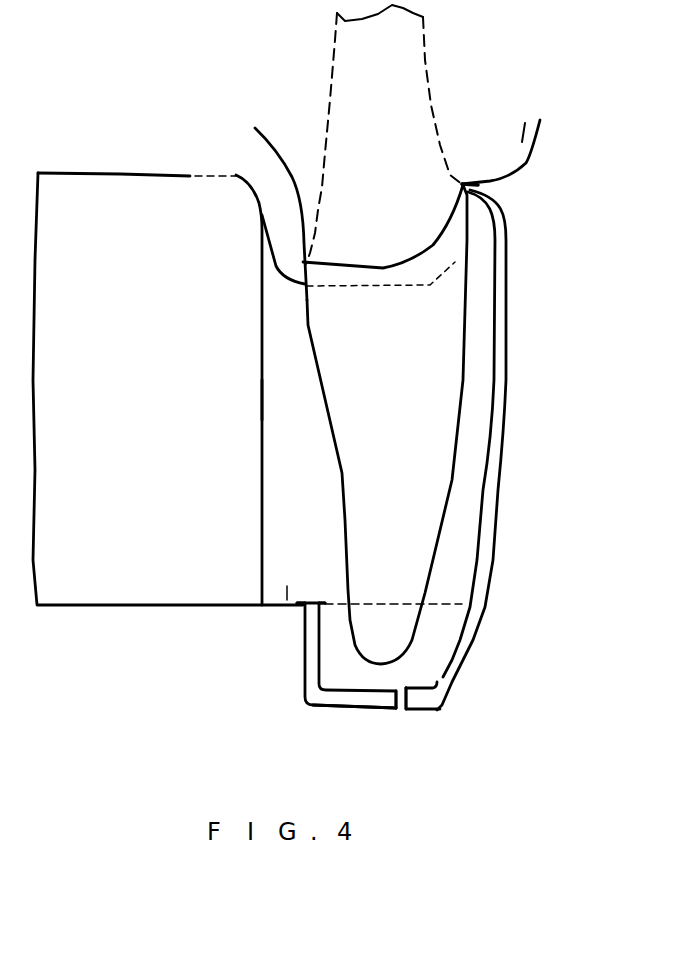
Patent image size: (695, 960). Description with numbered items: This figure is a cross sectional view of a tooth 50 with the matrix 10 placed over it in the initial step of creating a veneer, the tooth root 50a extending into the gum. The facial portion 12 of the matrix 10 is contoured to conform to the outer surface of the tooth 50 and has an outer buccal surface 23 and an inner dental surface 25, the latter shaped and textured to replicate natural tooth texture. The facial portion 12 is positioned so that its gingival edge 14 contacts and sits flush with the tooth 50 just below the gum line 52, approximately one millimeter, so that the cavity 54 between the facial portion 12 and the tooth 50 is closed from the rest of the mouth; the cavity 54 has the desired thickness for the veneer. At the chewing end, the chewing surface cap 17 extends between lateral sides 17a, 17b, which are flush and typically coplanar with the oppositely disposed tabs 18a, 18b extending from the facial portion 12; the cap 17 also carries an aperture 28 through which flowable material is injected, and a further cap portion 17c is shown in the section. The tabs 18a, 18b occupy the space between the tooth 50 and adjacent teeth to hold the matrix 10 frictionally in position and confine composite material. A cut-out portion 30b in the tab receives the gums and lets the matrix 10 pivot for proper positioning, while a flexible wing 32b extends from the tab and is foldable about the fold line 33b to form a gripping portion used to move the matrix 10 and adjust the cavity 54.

The matrix 10 is at (542, 224).
The facial portion 12 is at (536, 376).
The gingival edge 14 is at (473, 188).
The chewing surface cap 17 is at (361, 717).
The lateral side 17a is at (306, 660).
The lateral side 17b is at (438, 635).
The bracket bottom plate 17c is at (333, 713).
The tab 18a is at (300, 609).
The tab 18b is at (307, 610).
The outer buccal surface 23 is at (507, 436).
The inner dental surface 25 is at (477, 511).
The aperture 28 is at (402, 712).
The cut-out portion 30b is at (283, 272).
The wing 32b is at (140, 344).
The fold line 33b is at (258, 400).
The tooth 50 is at (395, 373).
The tooth root 50a is at (402, 133).
The gum line 52 is at (537, 165).
The cavity 54 is at (495, 322).